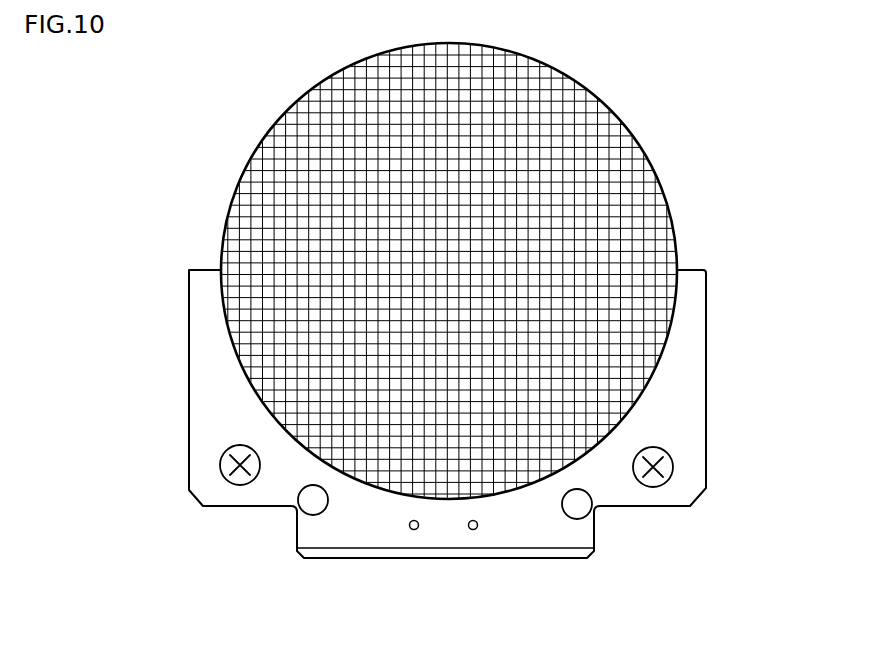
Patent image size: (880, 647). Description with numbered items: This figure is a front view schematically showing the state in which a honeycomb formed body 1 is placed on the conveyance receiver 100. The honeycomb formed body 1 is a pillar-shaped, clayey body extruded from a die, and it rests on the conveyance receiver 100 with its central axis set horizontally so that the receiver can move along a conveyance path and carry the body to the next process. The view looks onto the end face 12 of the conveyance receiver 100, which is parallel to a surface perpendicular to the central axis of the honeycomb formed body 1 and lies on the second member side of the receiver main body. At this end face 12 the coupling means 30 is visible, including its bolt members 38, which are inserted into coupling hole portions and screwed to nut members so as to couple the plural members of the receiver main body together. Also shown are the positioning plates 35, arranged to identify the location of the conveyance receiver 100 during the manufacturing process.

The honeycomb formed body 1 is at (646, 147).
The conveyance receiver 100 is at (465, 444).
The end face 12 is at (670, 412).
The coupling means 30 is at (232, 488).
The positioning plate 35 is at (320, 514).
The bolt member 38 is at (220, 466).